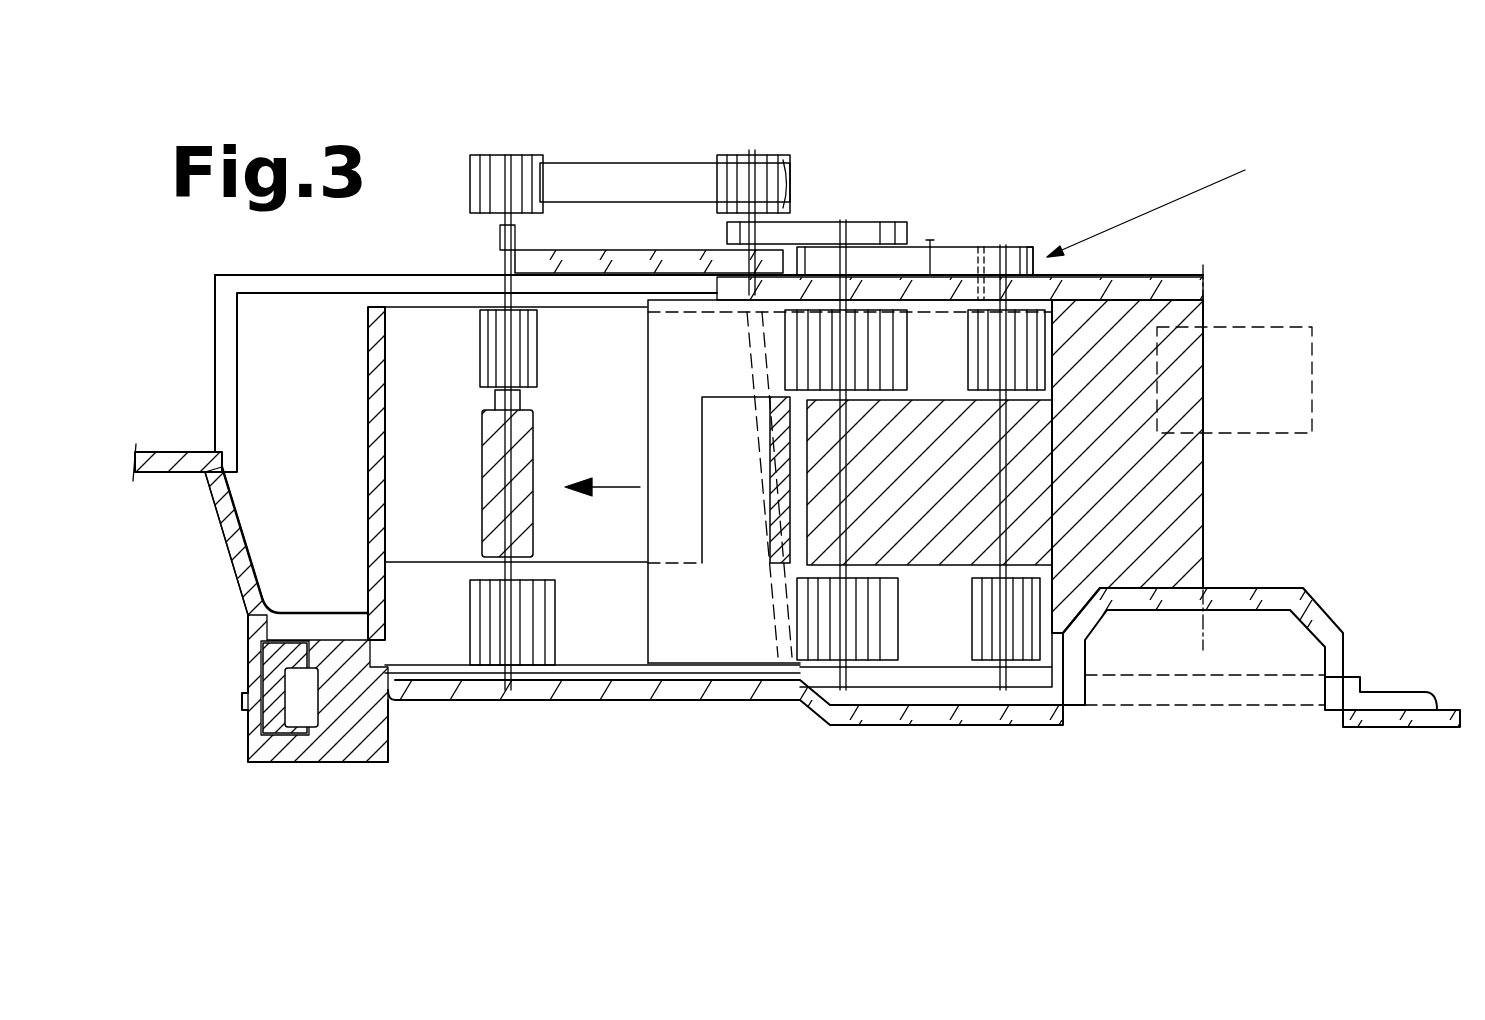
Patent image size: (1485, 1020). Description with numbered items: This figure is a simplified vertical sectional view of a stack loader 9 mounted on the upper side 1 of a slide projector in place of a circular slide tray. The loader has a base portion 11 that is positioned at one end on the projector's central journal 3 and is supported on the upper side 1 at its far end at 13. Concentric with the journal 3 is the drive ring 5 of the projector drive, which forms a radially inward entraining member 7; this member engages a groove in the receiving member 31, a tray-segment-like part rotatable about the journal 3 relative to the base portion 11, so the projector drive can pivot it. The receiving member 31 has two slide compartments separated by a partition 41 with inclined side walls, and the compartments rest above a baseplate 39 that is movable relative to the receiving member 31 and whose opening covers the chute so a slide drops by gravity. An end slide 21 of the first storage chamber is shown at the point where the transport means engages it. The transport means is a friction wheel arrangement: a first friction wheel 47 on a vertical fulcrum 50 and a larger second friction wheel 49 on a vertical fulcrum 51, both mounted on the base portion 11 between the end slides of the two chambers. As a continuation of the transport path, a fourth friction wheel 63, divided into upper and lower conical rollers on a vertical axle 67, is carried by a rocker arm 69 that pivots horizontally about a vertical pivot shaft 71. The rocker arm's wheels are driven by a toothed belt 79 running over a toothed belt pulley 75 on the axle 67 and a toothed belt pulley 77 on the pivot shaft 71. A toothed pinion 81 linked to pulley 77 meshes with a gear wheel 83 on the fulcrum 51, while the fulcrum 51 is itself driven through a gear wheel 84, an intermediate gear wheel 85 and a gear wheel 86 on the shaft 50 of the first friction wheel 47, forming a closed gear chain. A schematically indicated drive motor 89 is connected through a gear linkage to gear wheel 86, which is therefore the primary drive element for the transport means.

The upper side 1 is at (165, 465).
The central journal 3 is at (1230, 590).
The drive ring 5 is at (303, 733).
The entraining member 7 is at (303, 642).
The stack loader 9 is at (1157, 198).
The base portion 11 is at (1163, 300).
The support point 13 is at (215, 455).
The end slide 21 is at (678, 628).
The receiving member 31 is at (375, 410).
The baseplate 39 is at (410, 668).
The partition 41 is at (785, 513).
The first friction wheel 47 is at (1088, 310).
The second friction wheel 49 is at (872, 355).
The vertical fulcrum 50 is at (1027, 250).
The vertical fulcrum 51 is at (855, 225).
The fourth friction wheel 63 is at (495, 345).
The vertical rotation axle 67 is at (505, 150).
The rocker arm 69 is at (600, 268).
The vertical pivot shaft 71 is at (752, 150).
The toothed belt pulley 75 is at (530, 160).
The toothed belt pulley 77 is at (783, 162).
The toothed belt 79 is at (630, 163).
The toothed pinion 81 is at (727, 235).
The gear wheel 83 is at (867, 267).
The gear wheel 84 is at (958, 258).
The intermediate gear wheel 85 is at (1003, 250).
The gear wheel 86 is at (1045, 262).
The drive motor 89 is at (1270, 328).